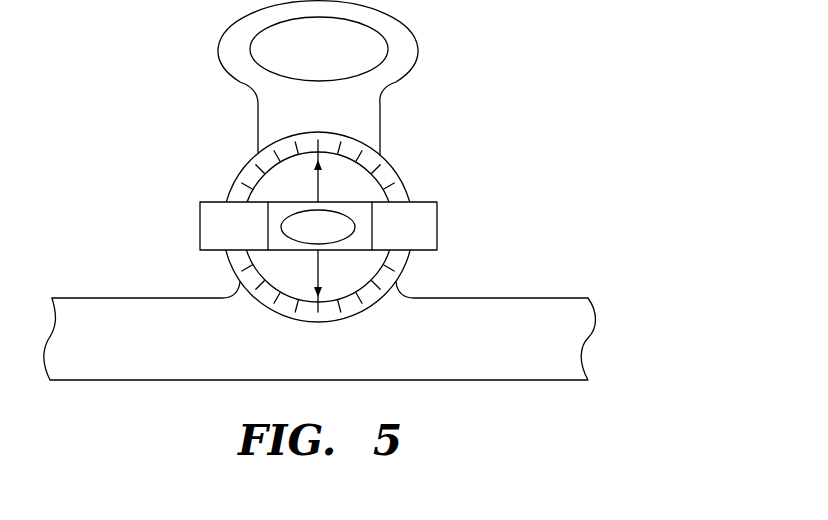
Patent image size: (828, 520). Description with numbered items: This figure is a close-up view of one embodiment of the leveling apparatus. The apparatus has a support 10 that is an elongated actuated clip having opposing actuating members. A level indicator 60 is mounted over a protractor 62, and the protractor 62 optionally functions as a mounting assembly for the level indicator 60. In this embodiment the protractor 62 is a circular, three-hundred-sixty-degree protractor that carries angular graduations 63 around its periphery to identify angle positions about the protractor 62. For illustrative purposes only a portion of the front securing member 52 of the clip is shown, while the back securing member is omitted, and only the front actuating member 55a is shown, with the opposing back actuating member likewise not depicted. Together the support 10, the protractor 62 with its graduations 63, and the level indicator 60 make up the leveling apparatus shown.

The support 10 is at (114, 77).
The front securing member 52 is at (125, 307).
The front actuating member 55a is at (412, 52).
The level indicator 60 is at (428, 225).
The protractor 62 is at (247, 173).
The angular graduations 63 is at (382, 173).